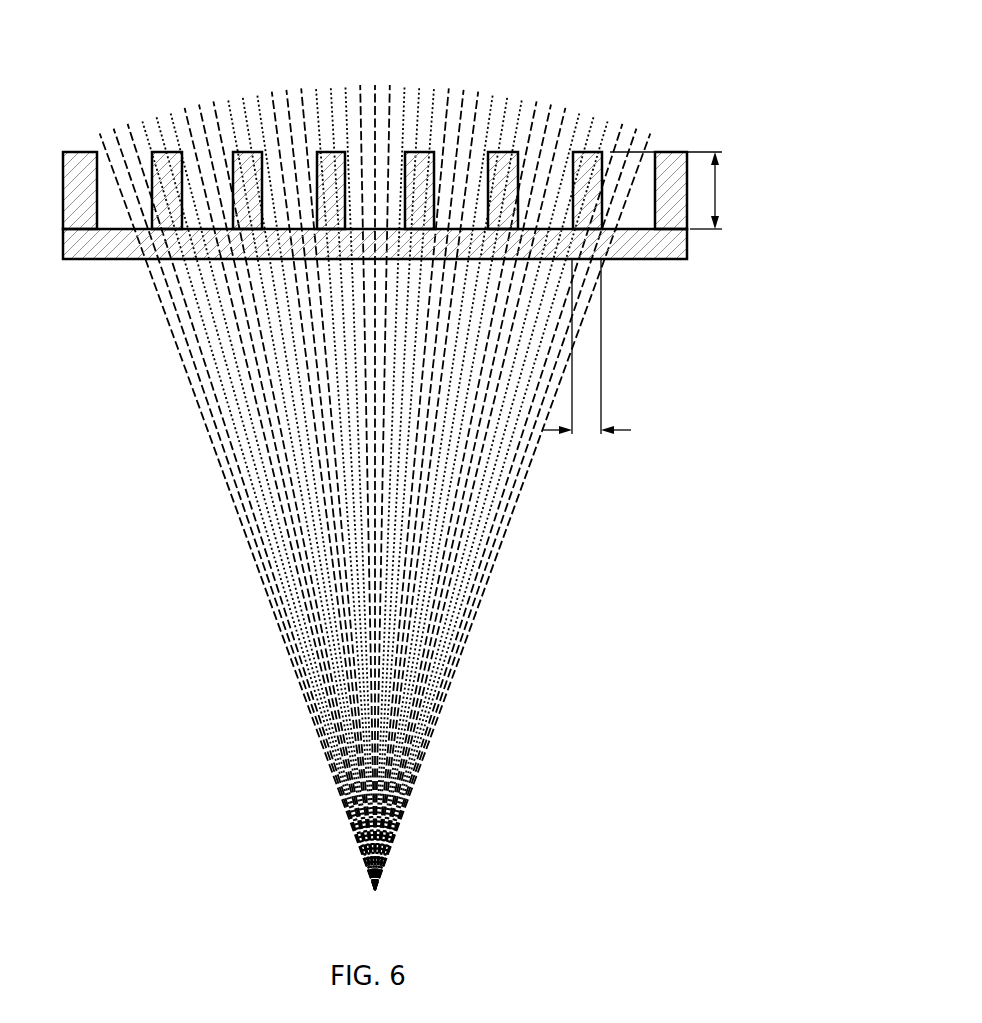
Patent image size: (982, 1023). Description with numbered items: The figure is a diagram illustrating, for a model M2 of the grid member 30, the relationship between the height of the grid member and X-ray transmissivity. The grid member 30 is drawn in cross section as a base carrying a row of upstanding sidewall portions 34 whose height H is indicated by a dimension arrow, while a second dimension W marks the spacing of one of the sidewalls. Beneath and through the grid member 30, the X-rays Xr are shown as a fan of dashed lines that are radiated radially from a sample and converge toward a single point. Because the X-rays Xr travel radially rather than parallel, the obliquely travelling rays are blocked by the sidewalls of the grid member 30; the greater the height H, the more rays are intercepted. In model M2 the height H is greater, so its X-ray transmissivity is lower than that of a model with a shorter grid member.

The model M2 is at (678, 40).
The grid member 30 is at (600, 78).
The grating protrusion 34 is at (164, 199).
The height H is at (673, 190).
The protrusion width W is at (586, 359).
The X-rays Xr is at (437, 731).